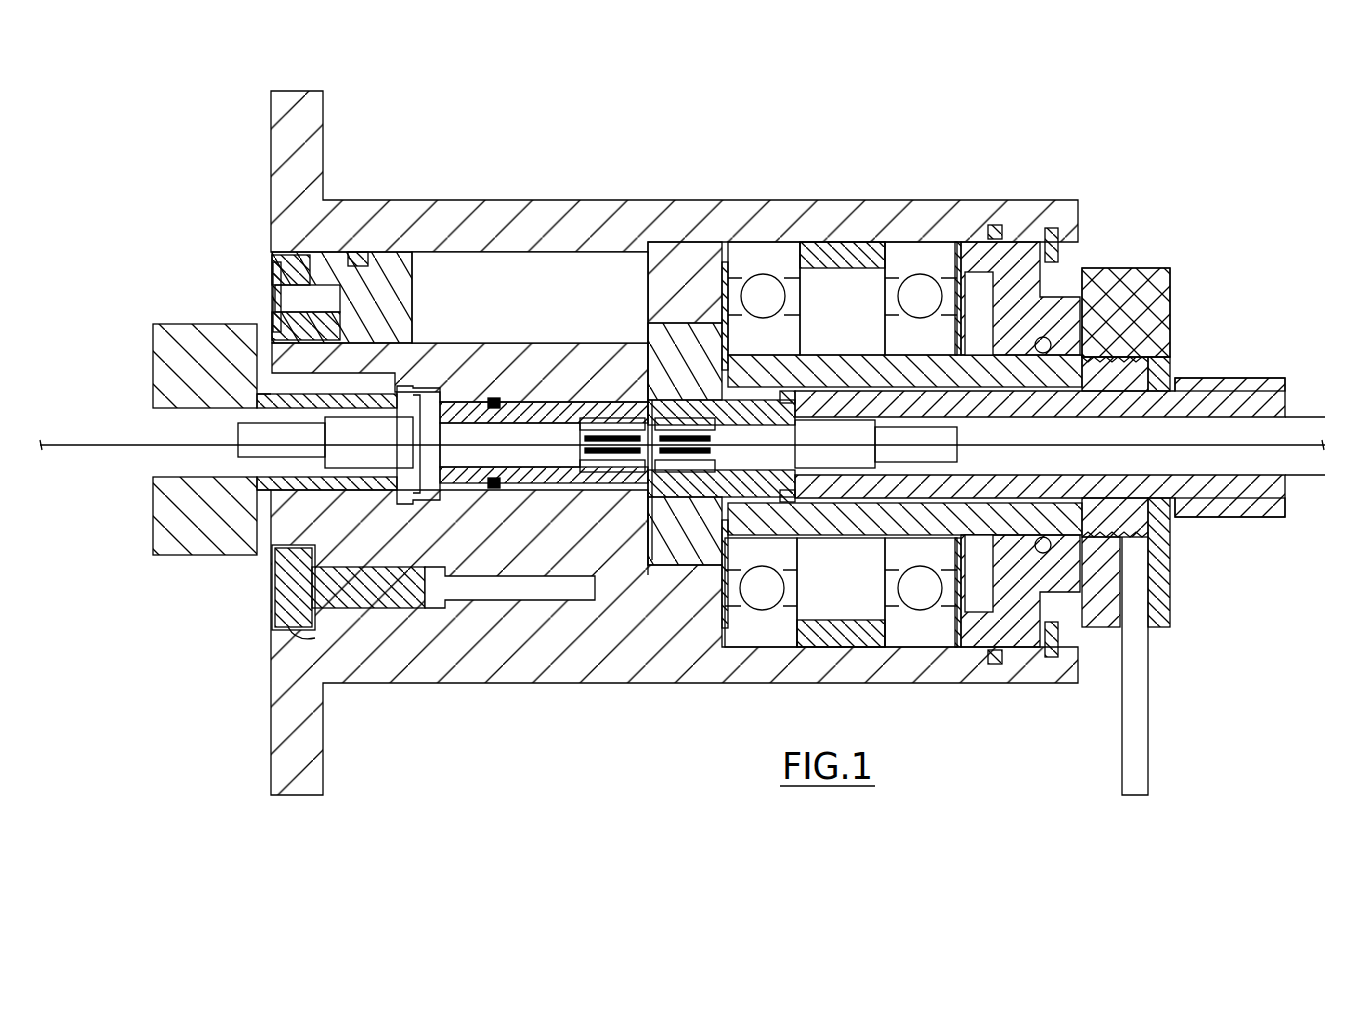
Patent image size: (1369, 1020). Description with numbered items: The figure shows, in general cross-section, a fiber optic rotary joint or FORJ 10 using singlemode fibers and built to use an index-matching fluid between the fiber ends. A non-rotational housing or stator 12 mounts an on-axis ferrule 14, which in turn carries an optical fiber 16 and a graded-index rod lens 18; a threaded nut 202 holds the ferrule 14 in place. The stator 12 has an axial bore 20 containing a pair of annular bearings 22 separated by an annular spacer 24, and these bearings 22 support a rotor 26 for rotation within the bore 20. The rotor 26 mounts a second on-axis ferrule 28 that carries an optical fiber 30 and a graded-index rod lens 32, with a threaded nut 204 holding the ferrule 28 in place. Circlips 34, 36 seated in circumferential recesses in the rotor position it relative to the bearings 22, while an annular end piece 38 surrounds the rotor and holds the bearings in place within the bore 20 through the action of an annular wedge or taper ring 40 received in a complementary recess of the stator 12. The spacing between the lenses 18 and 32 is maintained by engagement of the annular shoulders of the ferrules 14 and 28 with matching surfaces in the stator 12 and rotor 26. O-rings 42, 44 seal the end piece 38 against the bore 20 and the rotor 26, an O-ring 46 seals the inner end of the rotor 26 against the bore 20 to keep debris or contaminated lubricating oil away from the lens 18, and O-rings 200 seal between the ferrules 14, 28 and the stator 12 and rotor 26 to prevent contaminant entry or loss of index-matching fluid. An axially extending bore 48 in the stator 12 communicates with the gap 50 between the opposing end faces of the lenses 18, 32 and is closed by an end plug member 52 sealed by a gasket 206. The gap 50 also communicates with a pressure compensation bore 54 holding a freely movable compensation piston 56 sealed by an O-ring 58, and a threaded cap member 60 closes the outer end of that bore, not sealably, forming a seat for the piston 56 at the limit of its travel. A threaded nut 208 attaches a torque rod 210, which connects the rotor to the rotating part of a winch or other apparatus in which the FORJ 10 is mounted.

The FORJ 10 is at (671, 106).
The stator 12 is at (930, 215).
The ferrule 14 is at (537, 480).
The optical fiber 16 is at (105, 430).
The graded-index rod lens 18 is at (530, 418).
The axial bore 20 is at (1060, 278).
The annular bearings 22 is at (760, 265).
The annular spacer 24 is at (838, 245).
The rotor 26 is at (1130, 370).
The ferrule 28 is at (702, 497).
The optical fiber 30 is at (1302, 428).
The graded-index rod lens 32 is at (638, 403).
The circlip 34 is at (724, 403).
The circlip 36 is at (961, 342).
The annular end piece 38 is at (1118, 285).
The taper ring 40 is at (1052, 238).
The O-ring 42 is at (998, 228).
The O-ring 44 is at (1160, 270).
The O-ring 46 is at (677, 400).
The axially extending bore 48 is at (470, 590).
The gap 50 is at (642, 550).
The end plug member 52 is at (290, 612).
The pressure compensation bore 54 is at (432, 290).
The compensation piston 56 is at (322, 285).
The O-ring 58 is at (360, 252).
The threaded cap member 60 is at (273, 270).
The O-rings 200 is at (494, 402).
The threaded nut 202 is at (192, 332).
The threaded nut 204 is at (1205, 387).
The gasket 206 is at (300, 640).
The threaded nut 208 is at (1160, 568).
The torque rod 210 is at (1135, 640).